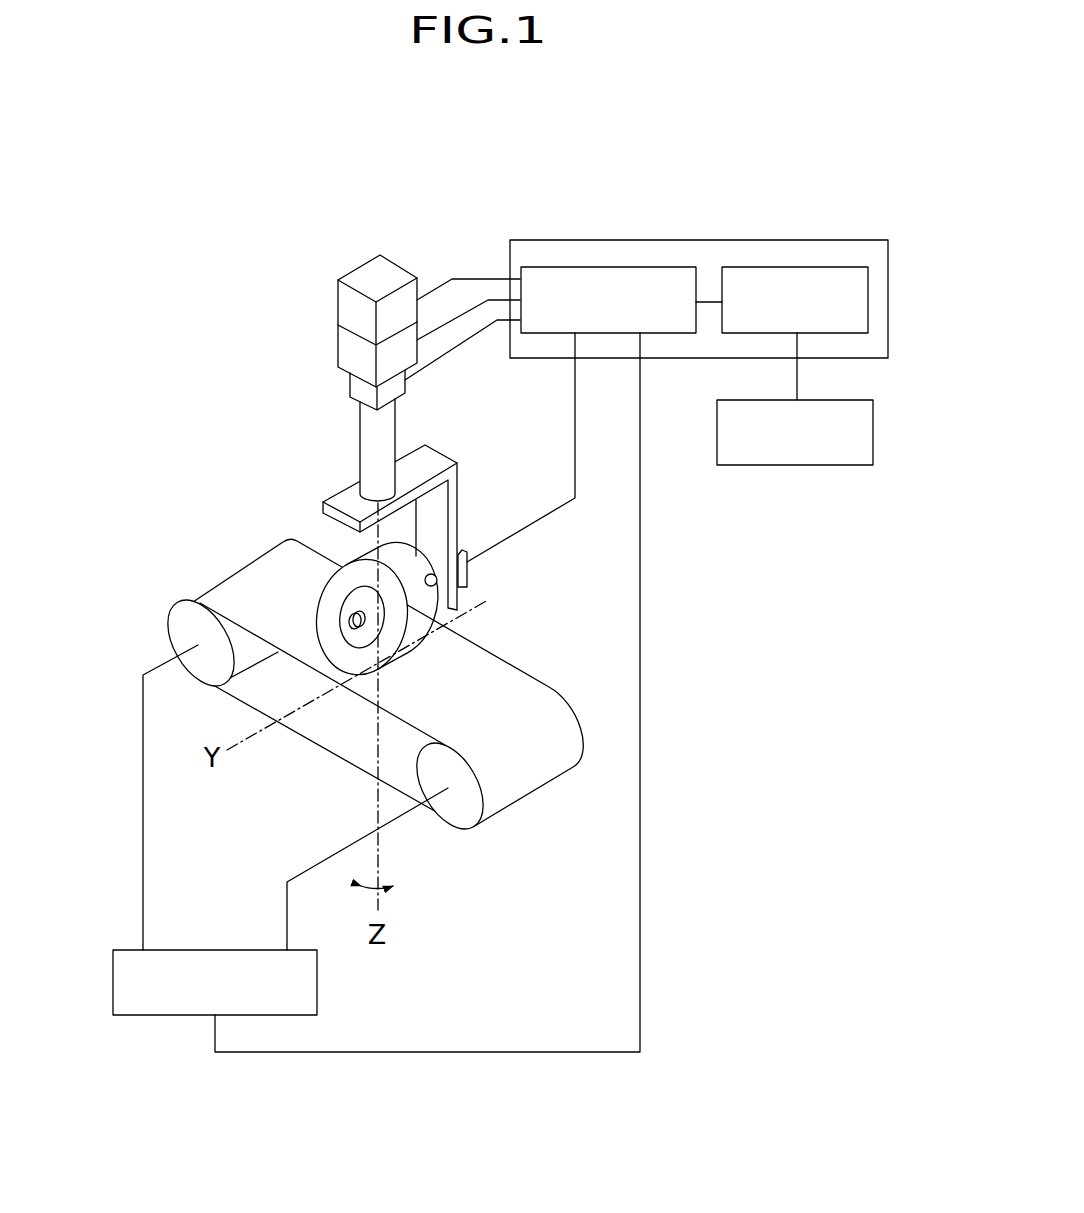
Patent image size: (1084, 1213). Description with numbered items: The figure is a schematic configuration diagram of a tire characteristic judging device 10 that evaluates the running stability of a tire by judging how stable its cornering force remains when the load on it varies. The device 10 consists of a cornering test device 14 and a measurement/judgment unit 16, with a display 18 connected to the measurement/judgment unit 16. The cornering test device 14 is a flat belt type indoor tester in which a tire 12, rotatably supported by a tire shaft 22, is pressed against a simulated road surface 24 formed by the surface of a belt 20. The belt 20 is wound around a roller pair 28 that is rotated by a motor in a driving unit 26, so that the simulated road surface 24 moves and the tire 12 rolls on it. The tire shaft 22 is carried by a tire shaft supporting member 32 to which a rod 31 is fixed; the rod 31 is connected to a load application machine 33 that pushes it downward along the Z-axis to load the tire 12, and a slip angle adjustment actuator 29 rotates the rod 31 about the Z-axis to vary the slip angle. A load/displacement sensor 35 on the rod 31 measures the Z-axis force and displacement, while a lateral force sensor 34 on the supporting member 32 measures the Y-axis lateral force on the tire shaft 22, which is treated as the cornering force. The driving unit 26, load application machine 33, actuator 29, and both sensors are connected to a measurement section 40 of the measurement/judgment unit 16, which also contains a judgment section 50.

The tire characteristic judging device 10 is at (302, 194).
The tire 12 is at (340, 570).
The cornering test device 14 is at (221, 417).
The measurement/judgment unit 16 is at (715, 241).
The display 18 is at (780, 468).
The belt 20 is at (515, 697).
The tire shaft 22 is at (430, 573).
The simulated road surface 24 is at (460, 664).
The driving unit 26 is at (207, 950).
The roller pair 28 is at (178, 633).
The slip angle adjustment actuator 29 is at (348, 310).
The rod 31 is at (377, 450).
The tire shaft supporting member 32 is at (457, 487).
The load application machine 33 is at (348, 350).
The lateral force sensor 34 is at (467, 572).
The load/displacement sensor 35 is at (362, 390).
The measurement section 40 is at (602, 265).
The judgment section 50 is at (808, 265).